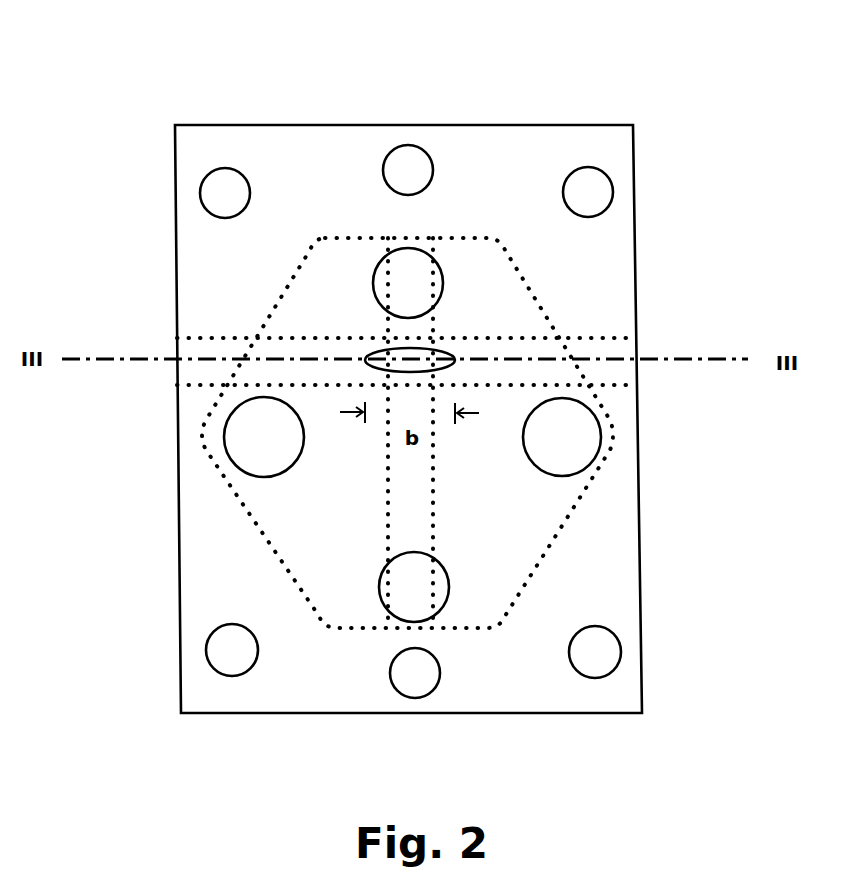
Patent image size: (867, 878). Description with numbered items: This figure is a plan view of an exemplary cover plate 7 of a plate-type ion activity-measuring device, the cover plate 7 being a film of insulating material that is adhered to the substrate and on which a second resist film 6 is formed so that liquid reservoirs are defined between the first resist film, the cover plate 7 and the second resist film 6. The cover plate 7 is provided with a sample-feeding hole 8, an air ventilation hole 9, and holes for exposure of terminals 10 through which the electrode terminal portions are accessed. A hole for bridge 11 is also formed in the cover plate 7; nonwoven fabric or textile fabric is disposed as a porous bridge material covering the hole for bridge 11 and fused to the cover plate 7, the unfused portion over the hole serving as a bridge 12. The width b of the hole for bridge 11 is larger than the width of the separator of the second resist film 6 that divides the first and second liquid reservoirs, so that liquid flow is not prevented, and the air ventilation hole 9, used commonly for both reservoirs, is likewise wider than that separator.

The second resist film 6 is at (567, 532).
The cover plate 7 is at (633, 157).
The sample-feeding hole 8 is at (248, 440).
The air ventilation hole 9 is at (436, 282).
The holes for exposure of terminals 10 is at (585, 190).
The hole for bridge 11 is at (450, 362).
The bridge 12 is at (390, 362).